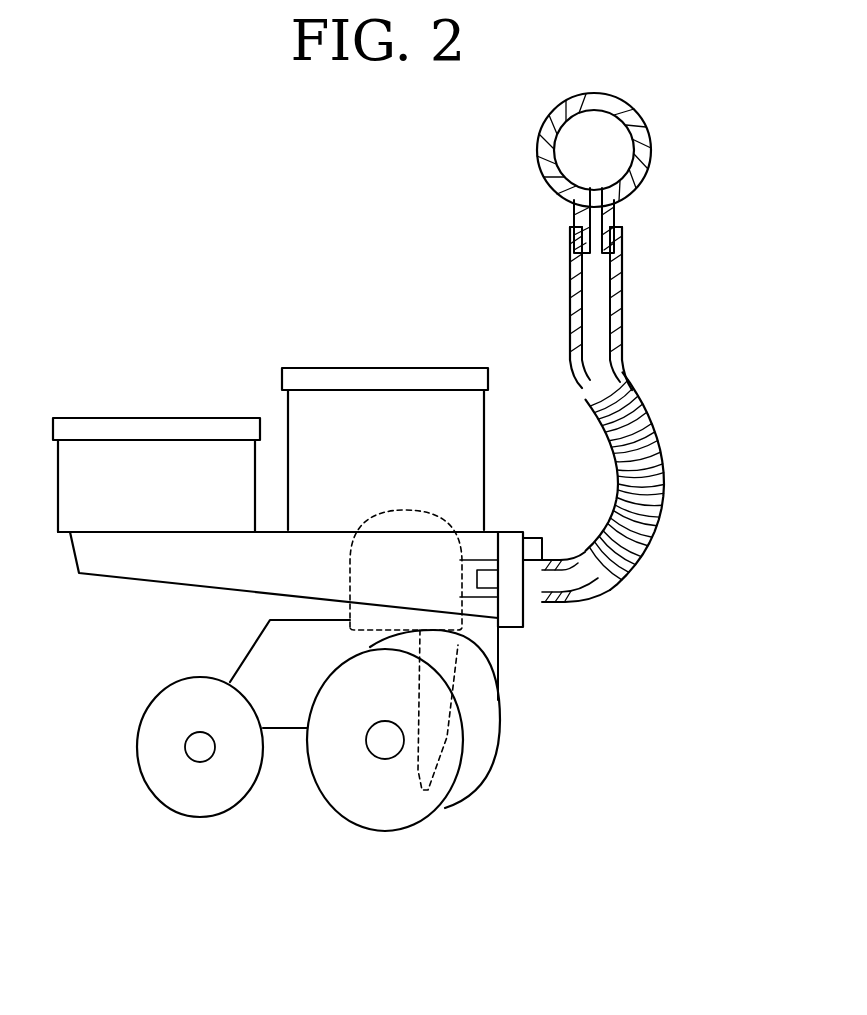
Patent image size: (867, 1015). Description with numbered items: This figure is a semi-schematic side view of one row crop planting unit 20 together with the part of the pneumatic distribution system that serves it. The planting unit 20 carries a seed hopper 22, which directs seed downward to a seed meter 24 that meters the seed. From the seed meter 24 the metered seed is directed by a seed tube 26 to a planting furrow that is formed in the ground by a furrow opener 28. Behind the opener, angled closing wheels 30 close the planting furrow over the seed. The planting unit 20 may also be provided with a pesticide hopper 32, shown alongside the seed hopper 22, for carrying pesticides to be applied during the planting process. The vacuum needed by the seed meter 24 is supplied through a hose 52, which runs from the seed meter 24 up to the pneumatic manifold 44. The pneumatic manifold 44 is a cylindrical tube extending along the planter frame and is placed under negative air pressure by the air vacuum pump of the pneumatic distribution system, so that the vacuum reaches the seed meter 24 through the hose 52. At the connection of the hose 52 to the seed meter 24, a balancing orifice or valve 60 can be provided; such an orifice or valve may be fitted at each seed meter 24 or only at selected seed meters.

The row crop planting unit 20 is at (184, 348).
The seed hopper 22 is at (360, 368).
The seed meter 24 is at (338, 560).
The seed tube 26 is at (447, 735).
The furrow opener 28 is at (387, 822).
The angled closing wheels 30 is at (202, 806).
The pesticide hopper 32 is at (137, 416).
The pneumatic manifold 44 is at (646, 122).
The hose 52 is at (648, 428).
The balancing orifice or valve 60 is at (517, 630).